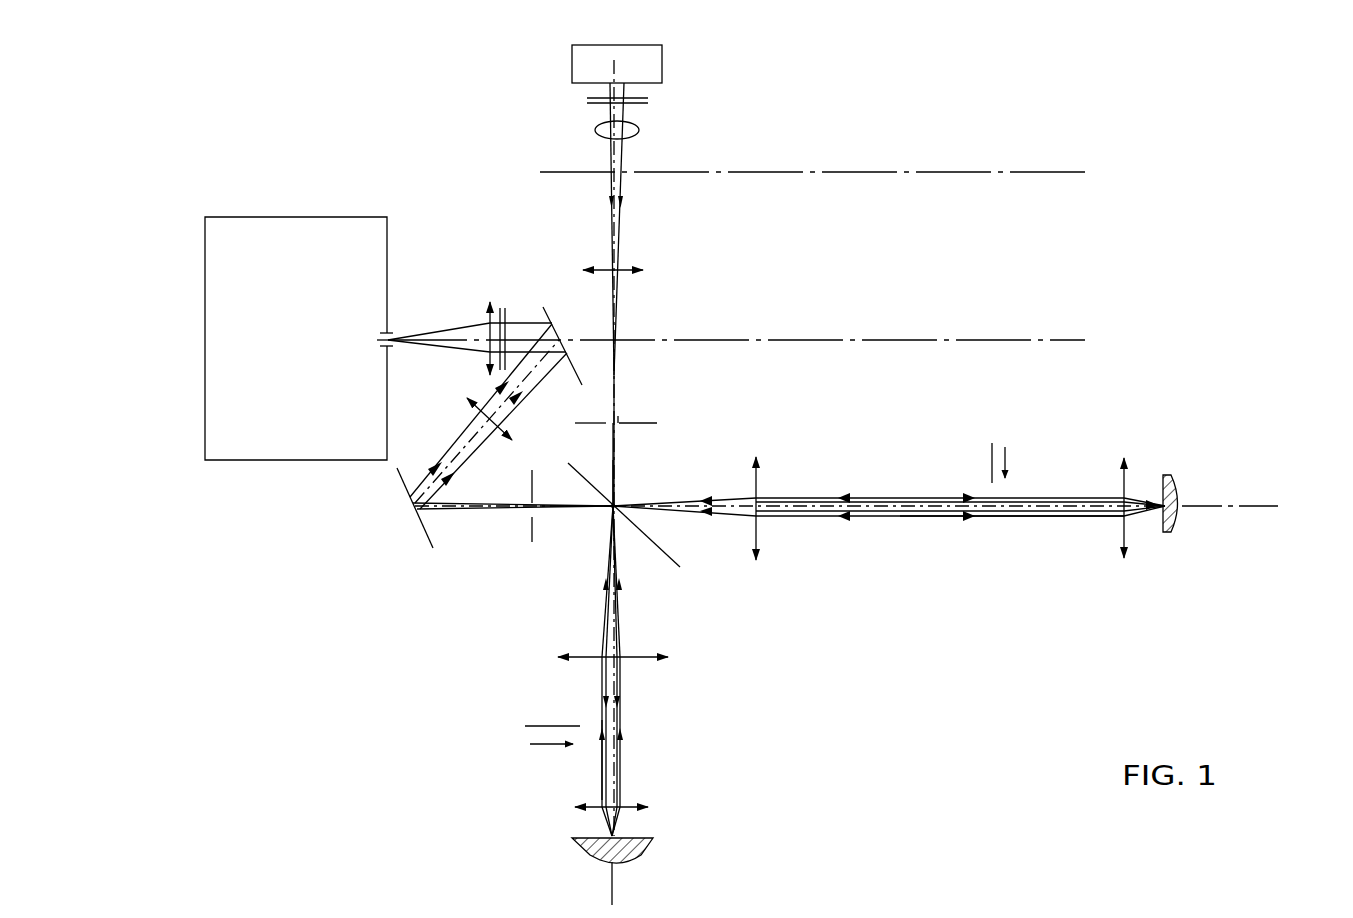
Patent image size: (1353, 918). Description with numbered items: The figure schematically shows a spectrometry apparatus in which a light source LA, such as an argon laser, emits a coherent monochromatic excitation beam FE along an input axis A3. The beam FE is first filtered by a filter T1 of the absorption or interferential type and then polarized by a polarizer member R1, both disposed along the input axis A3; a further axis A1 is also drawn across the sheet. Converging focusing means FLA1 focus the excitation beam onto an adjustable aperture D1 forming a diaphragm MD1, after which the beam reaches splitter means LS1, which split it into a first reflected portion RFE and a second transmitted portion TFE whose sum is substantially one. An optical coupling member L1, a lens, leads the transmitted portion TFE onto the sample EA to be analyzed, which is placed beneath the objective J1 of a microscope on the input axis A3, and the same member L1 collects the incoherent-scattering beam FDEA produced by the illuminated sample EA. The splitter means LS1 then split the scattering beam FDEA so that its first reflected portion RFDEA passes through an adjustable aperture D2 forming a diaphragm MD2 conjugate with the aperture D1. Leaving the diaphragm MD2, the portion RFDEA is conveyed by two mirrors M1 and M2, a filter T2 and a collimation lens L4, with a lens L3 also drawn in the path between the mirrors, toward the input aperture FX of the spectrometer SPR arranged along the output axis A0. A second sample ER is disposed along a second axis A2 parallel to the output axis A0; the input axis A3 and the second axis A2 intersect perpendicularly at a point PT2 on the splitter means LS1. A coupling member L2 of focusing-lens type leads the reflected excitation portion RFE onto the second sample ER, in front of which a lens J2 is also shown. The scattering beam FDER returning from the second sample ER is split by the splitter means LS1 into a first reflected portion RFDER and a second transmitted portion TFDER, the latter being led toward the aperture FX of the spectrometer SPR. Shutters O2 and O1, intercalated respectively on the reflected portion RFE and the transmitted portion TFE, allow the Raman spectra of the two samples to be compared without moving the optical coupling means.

The light source LA is at (663, 68).
The coherent-excitation beam FE is at (610, 92).
The filter T1 is at (640, 107).
The polarizer member R1 is at (595, 134).
The axis A1 is at (839, 172).
The output axis A0 is at (764, 340).
The second axis A2 is at (1253, 506).
The input axis A3 is at (595, 888).
The focusing means FLA1 is at (640, 275).
The mirror M2 is at (548, 302).
The spectrometer SPR is at (262, 462).
The input aperture FX is at (392, 336).
The collimation lens L4 is at (488, 300).
The filter T2 is at (503, 306).
The mirror M1 is at (410, 540).
The lens L3 is at (465, 406).
The diaphragm MD1 is at (650, 420).
The adjustable aperture D1 is at (616, 420).
The diaphragm MD2 is at (522, 545).
The adjustable aperture D2 is at (520, 510).
The splitter means LS1 is at (667, 557).
The point PT2 is at (618, 500).
The second transmitted portion TFDER is at (546, 497).
The first reflected portion RFDER is at (616, 448).
The first reflected portion RFDEA is at (598, 512).
The scattering beam FDER is at (862, 455).
The first reflected portion RFE is at (968, 520).
The coupling member L2 is at (760, 555).
The lens J2 is at (1120, 555).
The shutter O2 is at (985, 450).
The second sample ER is at (1173, 480).
The second transmitted portion TFE is at (624, 680).
The incoherent-scattering beam FDEA is at (624, 733).
The optical coupling member L1 is at (660, 652).
The objective J1 is at (640, 800).
The shutter O1 is at (525, 724).
The sample EA is at (640, 855).